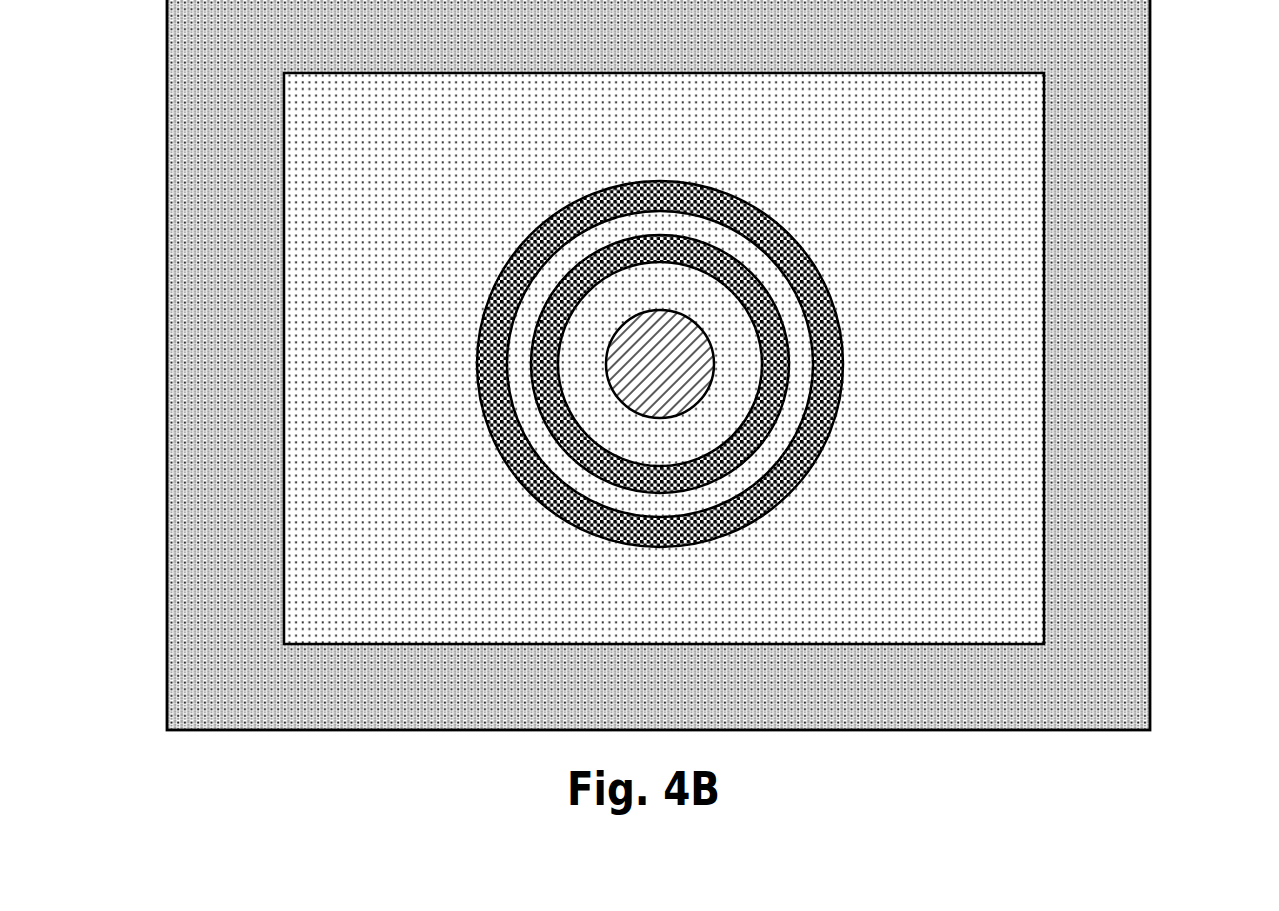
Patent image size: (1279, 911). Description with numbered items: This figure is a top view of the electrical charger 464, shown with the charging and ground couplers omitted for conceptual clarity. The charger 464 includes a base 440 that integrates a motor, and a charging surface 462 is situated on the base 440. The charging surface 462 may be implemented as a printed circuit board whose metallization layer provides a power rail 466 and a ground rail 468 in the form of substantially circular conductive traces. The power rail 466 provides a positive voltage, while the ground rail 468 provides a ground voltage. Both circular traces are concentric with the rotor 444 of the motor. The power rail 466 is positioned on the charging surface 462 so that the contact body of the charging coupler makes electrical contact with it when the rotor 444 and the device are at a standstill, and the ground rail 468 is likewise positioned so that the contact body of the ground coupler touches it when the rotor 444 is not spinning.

The base 440 is at (287, 731).
The rotor 444 is at (712, 345).
The charging surface 462 is at (935, 644).
The electrical charger 464 is at (719, 394).
The power rail 466 is at (773, 508).
The ground rail 468 is at (595, 445).